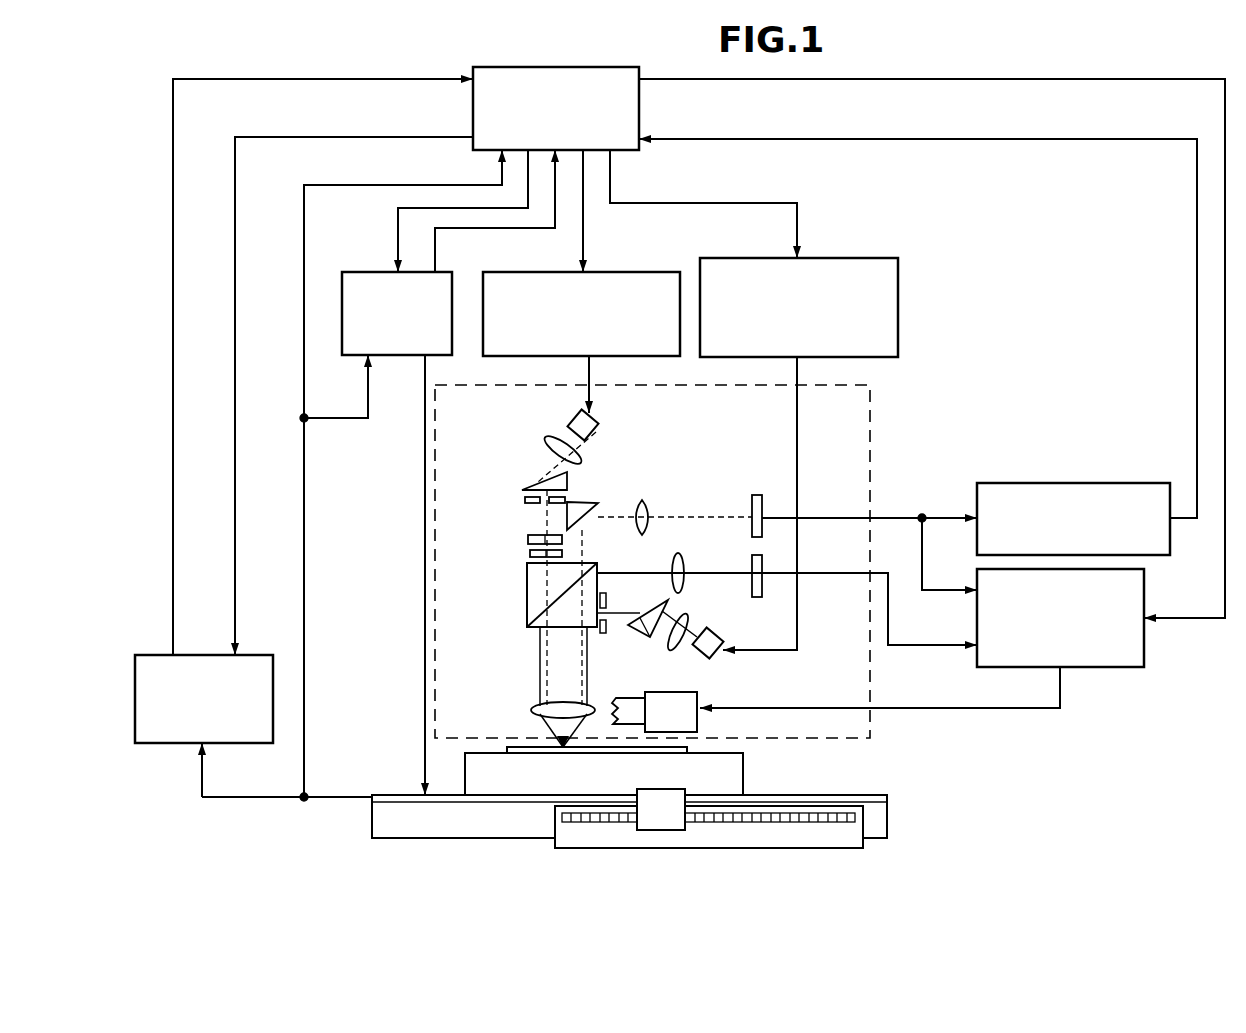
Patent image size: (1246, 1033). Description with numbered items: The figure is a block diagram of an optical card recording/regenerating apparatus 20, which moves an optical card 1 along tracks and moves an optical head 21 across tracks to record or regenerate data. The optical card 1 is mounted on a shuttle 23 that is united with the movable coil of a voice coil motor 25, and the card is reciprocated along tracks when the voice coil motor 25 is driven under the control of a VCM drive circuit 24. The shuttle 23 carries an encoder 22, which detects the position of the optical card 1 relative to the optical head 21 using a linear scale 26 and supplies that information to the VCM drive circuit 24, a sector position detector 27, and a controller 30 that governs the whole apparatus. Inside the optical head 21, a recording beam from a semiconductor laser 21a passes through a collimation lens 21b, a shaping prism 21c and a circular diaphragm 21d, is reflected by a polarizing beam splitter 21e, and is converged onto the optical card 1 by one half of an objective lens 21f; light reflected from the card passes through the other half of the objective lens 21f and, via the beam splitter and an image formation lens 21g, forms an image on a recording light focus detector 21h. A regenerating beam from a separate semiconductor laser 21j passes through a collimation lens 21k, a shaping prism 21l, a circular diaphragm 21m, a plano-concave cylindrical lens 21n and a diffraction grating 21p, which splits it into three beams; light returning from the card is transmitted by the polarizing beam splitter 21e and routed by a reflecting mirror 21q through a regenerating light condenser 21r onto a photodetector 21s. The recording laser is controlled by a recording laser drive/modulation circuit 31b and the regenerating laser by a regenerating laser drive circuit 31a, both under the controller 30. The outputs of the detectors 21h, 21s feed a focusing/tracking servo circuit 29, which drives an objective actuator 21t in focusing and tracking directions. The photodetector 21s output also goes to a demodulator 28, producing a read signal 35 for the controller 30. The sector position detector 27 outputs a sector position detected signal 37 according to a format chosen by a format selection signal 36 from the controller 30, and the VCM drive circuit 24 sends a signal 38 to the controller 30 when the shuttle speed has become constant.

The optical card 1 is at (525, 749).
The optical card recording/regenerating apparatus 20 is at (950, 735).
The optical head 21 is at (870, 400).
The semiconductor laser 21a is at (712, 660).
The collimation lens 21b is at (672, 652).
The shaping prism 21c is at (632, 640).
The circular diaphragm 21d is at (607, 600).
The polarizing beam splitter 21e is at (527, 598).
The objective lens 21f is at (540, 706).
The image formation lens 21g is at (682, 568).
The recording light focus detector 21h is at (757, 597).
The semiconductor laser 21j is at (598, 423).
The collimation lens 21k is at (585, 458).
The shaping prism 21l is at (570, 484).
The circular diaphragm 21m is at (525, 500).
The plano-concave cylindrical lens 21n is at (528, 539).
The diffraction grating 21p is at (530, 554).
The reflecting mirror 21q is at (568, 504).
The regenerating light condenser 21r is at (646, 502).
The photodetector 21s is at (757, 495).
The objective actuator 21t is at (698, 728).
The encoder 22 is at (670, 789).
The shuttle 23 is at (745, 778).
The VCM drive circuit 24 is at (452, 278).
The voice coil motor 25 is at (372, 824).
The linear scale 26 is at (863, 846).
The sector position detector 27 is at (243, 743).
The demodulator 28 is at (1090, 483).
The focusing/tracking servo circuit 29 is at (1118, 667).
The controller 30 is at (633, 67).
The regenerating laser drive circuit 31a is at (648, 272).
The recording laser drive/modulation circuit 31b is at (896, 258).
The read signal 35 is at (888, 141).
The format selection signal 36 is at (235, 140).
The sector position detected signal 37 is at (173, 88).
The signal 38 is at (548, 232).